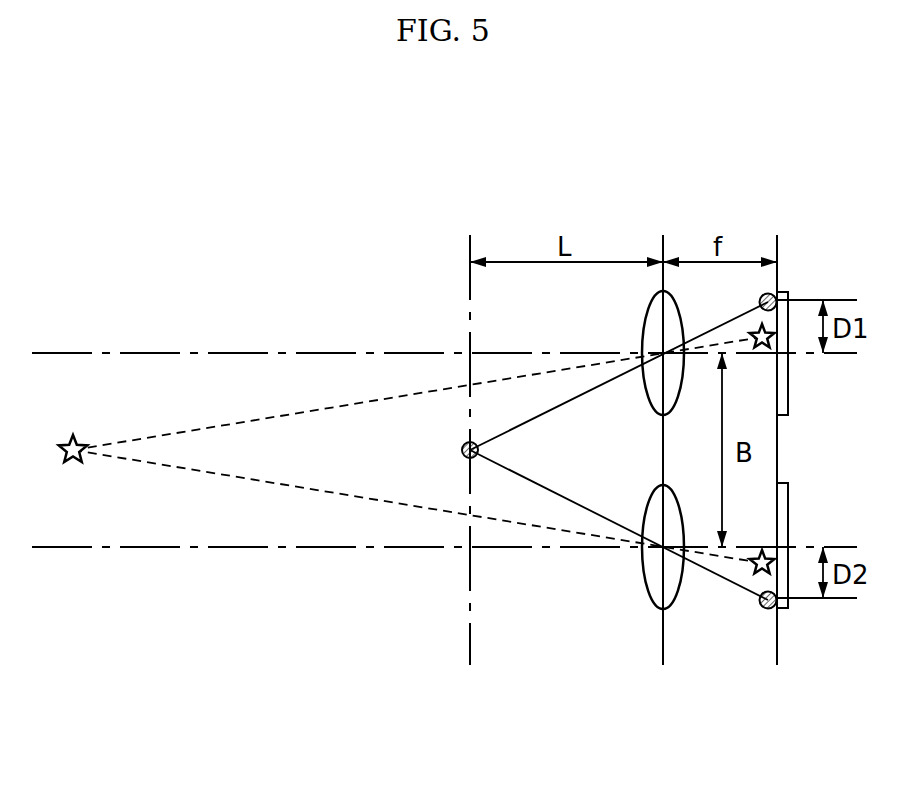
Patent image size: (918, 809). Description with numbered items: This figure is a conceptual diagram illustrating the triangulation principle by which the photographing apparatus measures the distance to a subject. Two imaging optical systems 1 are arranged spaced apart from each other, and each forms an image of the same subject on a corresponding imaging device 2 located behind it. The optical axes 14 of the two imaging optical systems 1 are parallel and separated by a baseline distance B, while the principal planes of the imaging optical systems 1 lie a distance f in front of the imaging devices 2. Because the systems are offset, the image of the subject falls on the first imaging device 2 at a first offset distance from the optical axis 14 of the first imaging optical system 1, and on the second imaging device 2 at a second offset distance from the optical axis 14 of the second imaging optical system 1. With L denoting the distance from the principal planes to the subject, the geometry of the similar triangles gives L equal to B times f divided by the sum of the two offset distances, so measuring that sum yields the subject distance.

The imaging optical system 1 is at (468, 198).
The imaging device 2 is at (782, 292).
The optical axis 14 is at (238, 353).